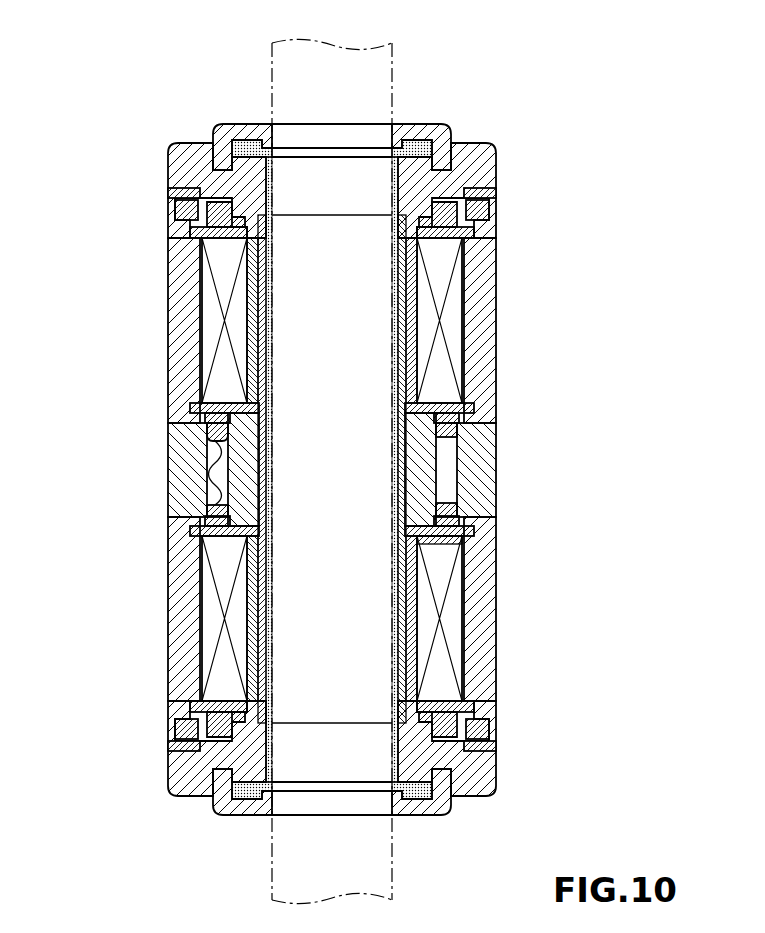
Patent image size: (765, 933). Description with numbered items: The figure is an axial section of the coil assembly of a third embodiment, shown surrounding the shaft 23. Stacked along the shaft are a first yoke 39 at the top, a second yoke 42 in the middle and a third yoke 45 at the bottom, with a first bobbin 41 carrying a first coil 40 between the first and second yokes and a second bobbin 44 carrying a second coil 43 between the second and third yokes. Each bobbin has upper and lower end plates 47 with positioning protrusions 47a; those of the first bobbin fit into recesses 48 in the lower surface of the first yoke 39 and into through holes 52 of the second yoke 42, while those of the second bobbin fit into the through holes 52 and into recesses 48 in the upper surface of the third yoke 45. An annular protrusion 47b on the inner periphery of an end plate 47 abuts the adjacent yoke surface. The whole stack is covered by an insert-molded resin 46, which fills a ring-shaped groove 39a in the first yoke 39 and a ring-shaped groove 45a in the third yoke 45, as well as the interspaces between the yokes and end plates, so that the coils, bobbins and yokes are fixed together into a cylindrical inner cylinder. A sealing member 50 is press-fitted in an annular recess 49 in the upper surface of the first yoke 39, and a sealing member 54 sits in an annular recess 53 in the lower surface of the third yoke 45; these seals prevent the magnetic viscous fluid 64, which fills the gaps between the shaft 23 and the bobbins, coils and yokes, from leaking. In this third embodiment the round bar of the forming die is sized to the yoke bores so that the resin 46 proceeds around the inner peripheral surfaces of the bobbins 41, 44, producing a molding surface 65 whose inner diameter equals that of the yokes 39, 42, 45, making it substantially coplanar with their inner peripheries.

The shaft 23 is at (397, 868).
The first yoke 39 is at (498, 157).
The ring-shaped groove 39a is at (185, 193).
The first coil 40 is at (455, 310).
The first bobbin 41 is at (438, 262).
The second yoke 42 is at (498, 462).
The second coil 43 is at (455, 598).
The second bobbin 44 is at (440, 628).
The third yoke 45 is at (498, 770).
The ring-shaped groove 45a is at (168, 745).
The resin 46 is at (172, 630).
The end plate 47 is at (470, 228).
The positioning protrusion 47a is at (445, 212).
The annular protrusion 47b is at (400, 190).
The recess 48 is at (398, 250).
The annular recess 49 is at (228, 140).
The sealing member 50 is at (245, 124).
The through hole 52 is at (207, 492).
The annular recess 53 is at (214, 802).
The sealing member 54 is at (425, 815).
The magnetic viscous fluid 64 is at (455, 562).
The molding surface 65 is at (268, 310).